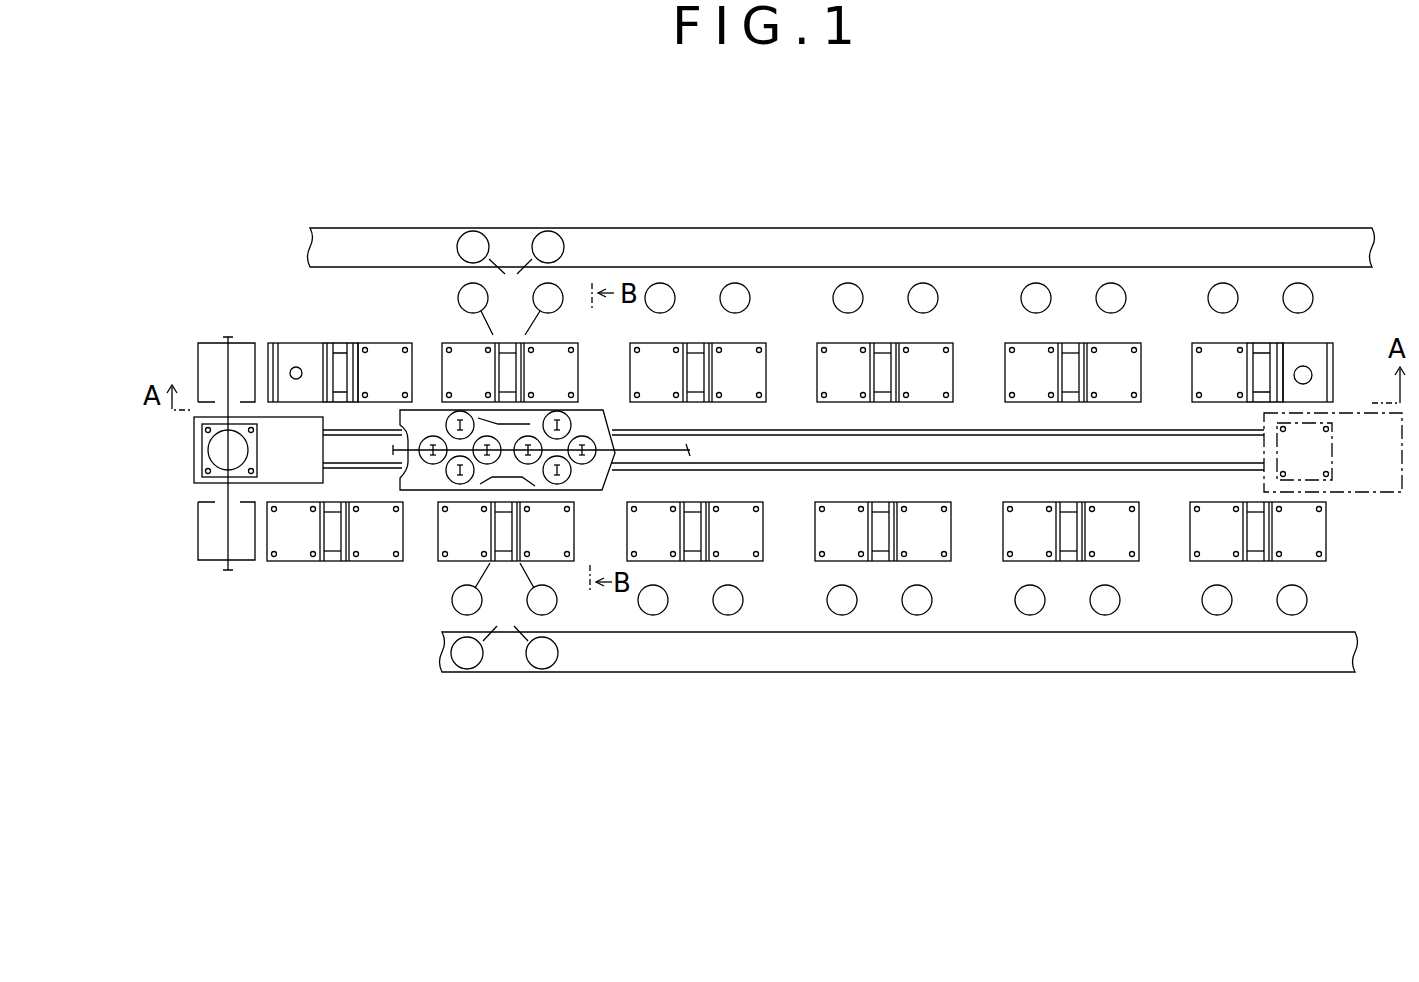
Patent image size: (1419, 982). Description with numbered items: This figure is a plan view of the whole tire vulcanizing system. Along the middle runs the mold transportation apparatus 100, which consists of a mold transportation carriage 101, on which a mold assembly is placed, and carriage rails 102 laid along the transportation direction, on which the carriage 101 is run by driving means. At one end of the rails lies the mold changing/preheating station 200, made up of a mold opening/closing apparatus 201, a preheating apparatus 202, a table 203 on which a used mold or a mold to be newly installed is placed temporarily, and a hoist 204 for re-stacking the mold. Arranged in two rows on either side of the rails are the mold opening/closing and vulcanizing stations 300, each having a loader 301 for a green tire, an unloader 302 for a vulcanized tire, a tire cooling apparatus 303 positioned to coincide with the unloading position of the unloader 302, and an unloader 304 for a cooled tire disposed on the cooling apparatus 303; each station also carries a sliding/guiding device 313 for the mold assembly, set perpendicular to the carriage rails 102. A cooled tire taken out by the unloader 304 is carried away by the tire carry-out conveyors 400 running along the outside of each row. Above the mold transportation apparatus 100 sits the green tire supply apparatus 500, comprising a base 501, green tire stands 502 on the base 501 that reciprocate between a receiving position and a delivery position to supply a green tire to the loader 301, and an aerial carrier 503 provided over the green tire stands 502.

The mold transportation apparatus 100 is at (185, 540).
The mold transportation carriage 101 is at (196, 466).
The carriage rails 102 is at (362, 466).
The mold changing/preheating station 200 is at (190, 320).
The mold opening/closing apparatus 201 is at (278, 347).
The preheating apparatus 202 is at (387, 343).
The table 203 is at (203, 358).
The hoist 204 is at (230, 566).
The mold opening/closing and vulcanizing station 300 is at (549, 337).
The loader 301 is at (614, 458).
The unloader 302 is at (458, 292).
The tire cooling apparatus 303 is at (752, 300).
The unloader for cooled tire 304 is at (496, 250).
The sliding/guiding device 313 is at (1292, 330).
The tire carry-out conveyor 400 is at (1020, 227).
The green tire supply apparatus 500 is at (617, 478).
The base 501 is at (610, 417).
The green tire stands 502 is at (420, 438).
The aerial carrier 503 is at (689, 455).